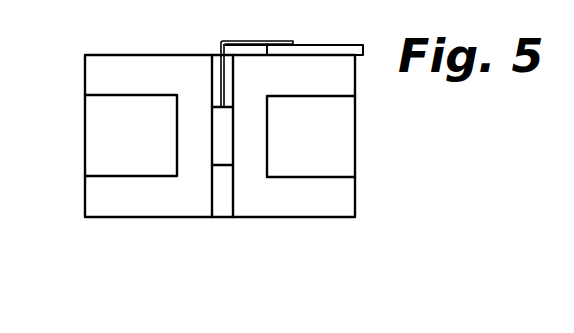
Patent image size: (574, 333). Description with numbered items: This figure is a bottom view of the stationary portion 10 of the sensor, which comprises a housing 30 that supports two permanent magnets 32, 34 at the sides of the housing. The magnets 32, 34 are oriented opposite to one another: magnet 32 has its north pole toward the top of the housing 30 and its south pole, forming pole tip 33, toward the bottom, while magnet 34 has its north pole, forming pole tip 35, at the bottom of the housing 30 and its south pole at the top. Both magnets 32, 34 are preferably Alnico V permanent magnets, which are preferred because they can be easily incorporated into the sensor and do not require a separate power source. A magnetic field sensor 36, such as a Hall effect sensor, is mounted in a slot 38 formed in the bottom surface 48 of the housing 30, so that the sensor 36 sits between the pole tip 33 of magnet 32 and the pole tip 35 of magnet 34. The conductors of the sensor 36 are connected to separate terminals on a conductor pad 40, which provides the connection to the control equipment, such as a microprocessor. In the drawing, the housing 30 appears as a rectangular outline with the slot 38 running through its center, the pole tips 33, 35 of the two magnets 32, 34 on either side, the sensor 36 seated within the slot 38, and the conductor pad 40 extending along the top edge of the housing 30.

The stationary portion 10 is at (392, 143).
The housing 30 is at (330, 218).
The permanent magnet 32 is at (357, 165).
The pole tip 33 is at (345, 117).
The permanent magnet 34 is at (83, 138).
The pole tip 35 is at (97, 108).
The magnetic field sensor 36 is at (211, 146).
The slot 38 is at (222, 218).
The conductor pad 40 is at (337, 47).
The bottom surface 48 is at (167, 65).